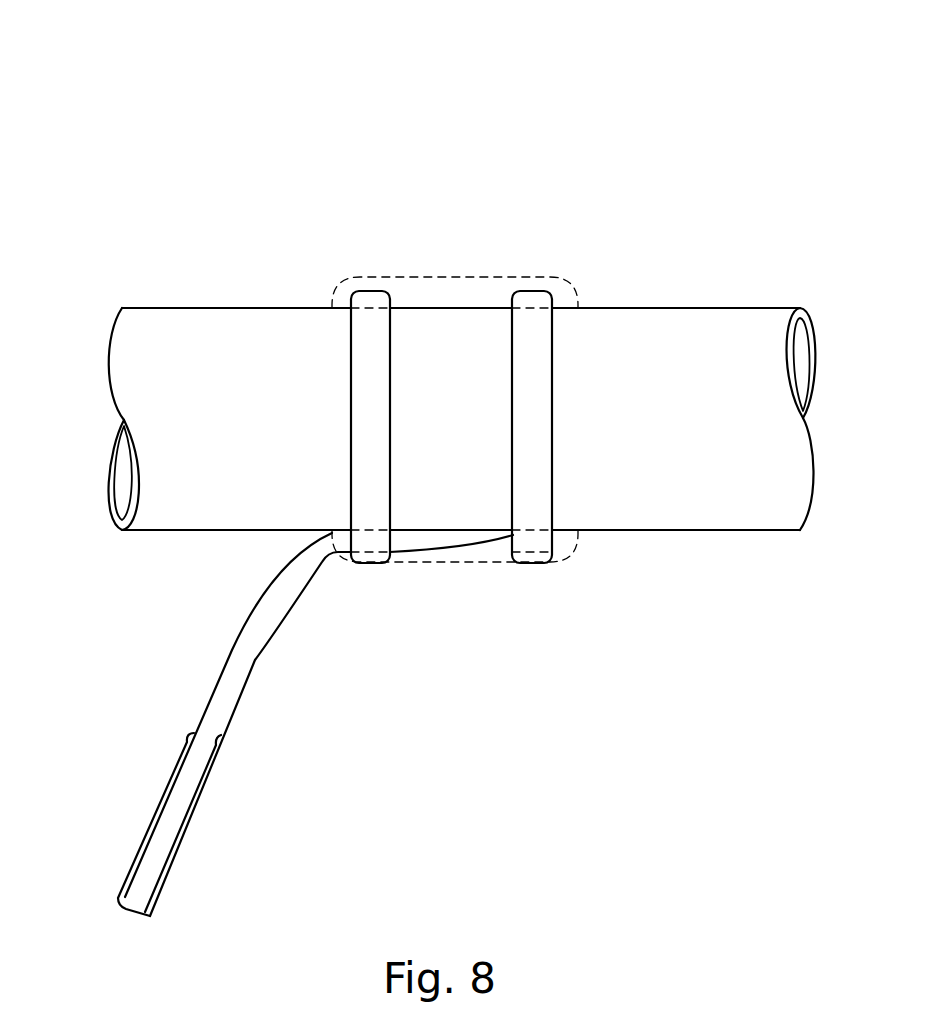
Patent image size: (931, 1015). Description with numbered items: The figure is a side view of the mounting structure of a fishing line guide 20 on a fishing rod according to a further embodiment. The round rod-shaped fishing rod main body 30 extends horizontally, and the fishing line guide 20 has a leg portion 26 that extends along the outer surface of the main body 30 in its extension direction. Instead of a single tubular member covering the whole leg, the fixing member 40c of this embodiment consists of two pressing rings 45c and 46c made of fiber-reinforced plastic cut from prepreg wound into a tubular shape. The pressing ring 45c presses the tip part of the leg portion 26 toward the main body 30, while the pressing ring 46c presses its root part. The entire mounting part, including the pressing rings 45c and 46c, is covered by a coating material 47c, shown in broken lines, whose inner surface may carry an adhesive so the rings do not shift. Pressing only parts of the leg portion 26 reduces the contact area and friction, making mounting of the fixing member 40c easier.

The fishing rod main body 30 is at (148, 308).
The fixing member 40c is at (481, 294).
The coating material 47c is at (507, 277).
The pressing ring 46c is at (355, 400).
The pressing ring 45c is at (552, 352).
The fishing line guide 20 is at (317, 724).
The leg portion 26 is at (440, 540).